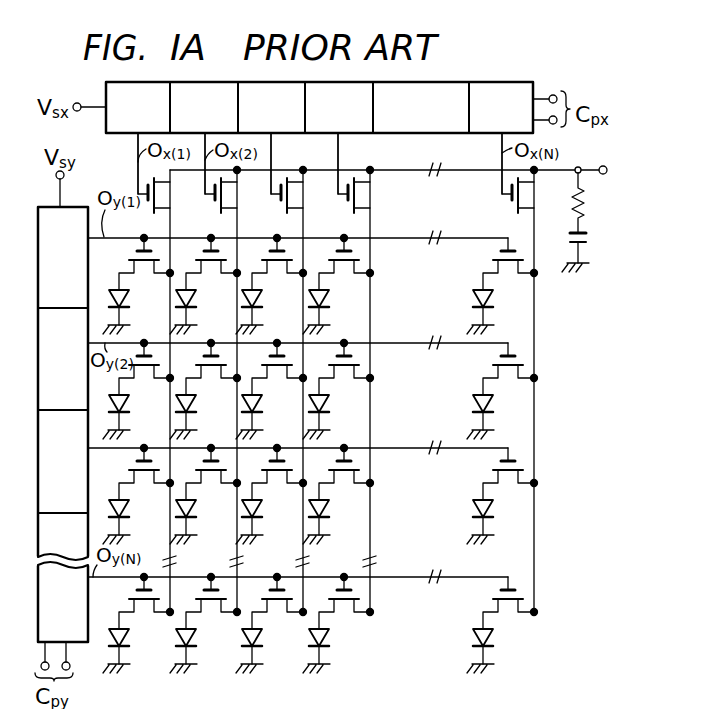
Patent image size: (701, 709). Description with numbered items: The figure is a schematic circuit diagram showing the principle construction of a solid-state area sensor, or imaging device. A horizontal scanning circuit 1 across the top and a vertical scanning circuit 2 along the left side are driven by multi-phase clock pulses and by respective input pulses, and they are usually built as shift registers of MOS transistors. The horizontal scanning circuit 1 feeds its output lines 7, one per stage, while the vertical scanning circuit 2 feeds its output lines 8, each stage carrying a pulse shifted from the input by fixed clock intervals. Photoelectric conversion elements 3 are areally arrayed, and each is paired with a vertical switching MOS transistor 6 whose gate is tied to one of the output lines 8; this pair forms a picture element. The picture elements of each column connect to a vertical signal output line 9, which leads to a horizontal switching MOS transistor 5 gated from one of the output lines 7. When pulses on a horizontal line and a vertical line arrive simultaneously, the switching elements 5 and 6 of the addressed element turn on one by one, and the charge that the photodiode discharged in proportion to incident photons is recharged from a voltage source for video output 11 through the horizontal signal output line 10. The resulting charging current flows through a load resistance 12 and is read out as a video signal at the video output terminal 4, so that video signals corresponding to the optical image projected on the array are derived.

The horizontal scanning circuit 1 is at (497, 82).
The vertical scanning circuit 2 is at (38, 352).
The photoelectric conversion element 3 is at (127, 298).
The video output terminal 4 is at (582, 167).
The horizontal switching MOS transistor 5 is at (158, 193).
The vertical switching MOS transistor 6 is at (143, 266).
The output lines of horizontal scanning circuit 7 is at (337, 151).
The output lines of vertical scanning circuit 8 is at (403, 238).
The vertical signal output line 9 is at (172, 221).
The horizontal signal output line 10 is at (356, 147).
The voltage source for video output 11 is at (588, 240).
The load resistance 12 is at (587, 209).